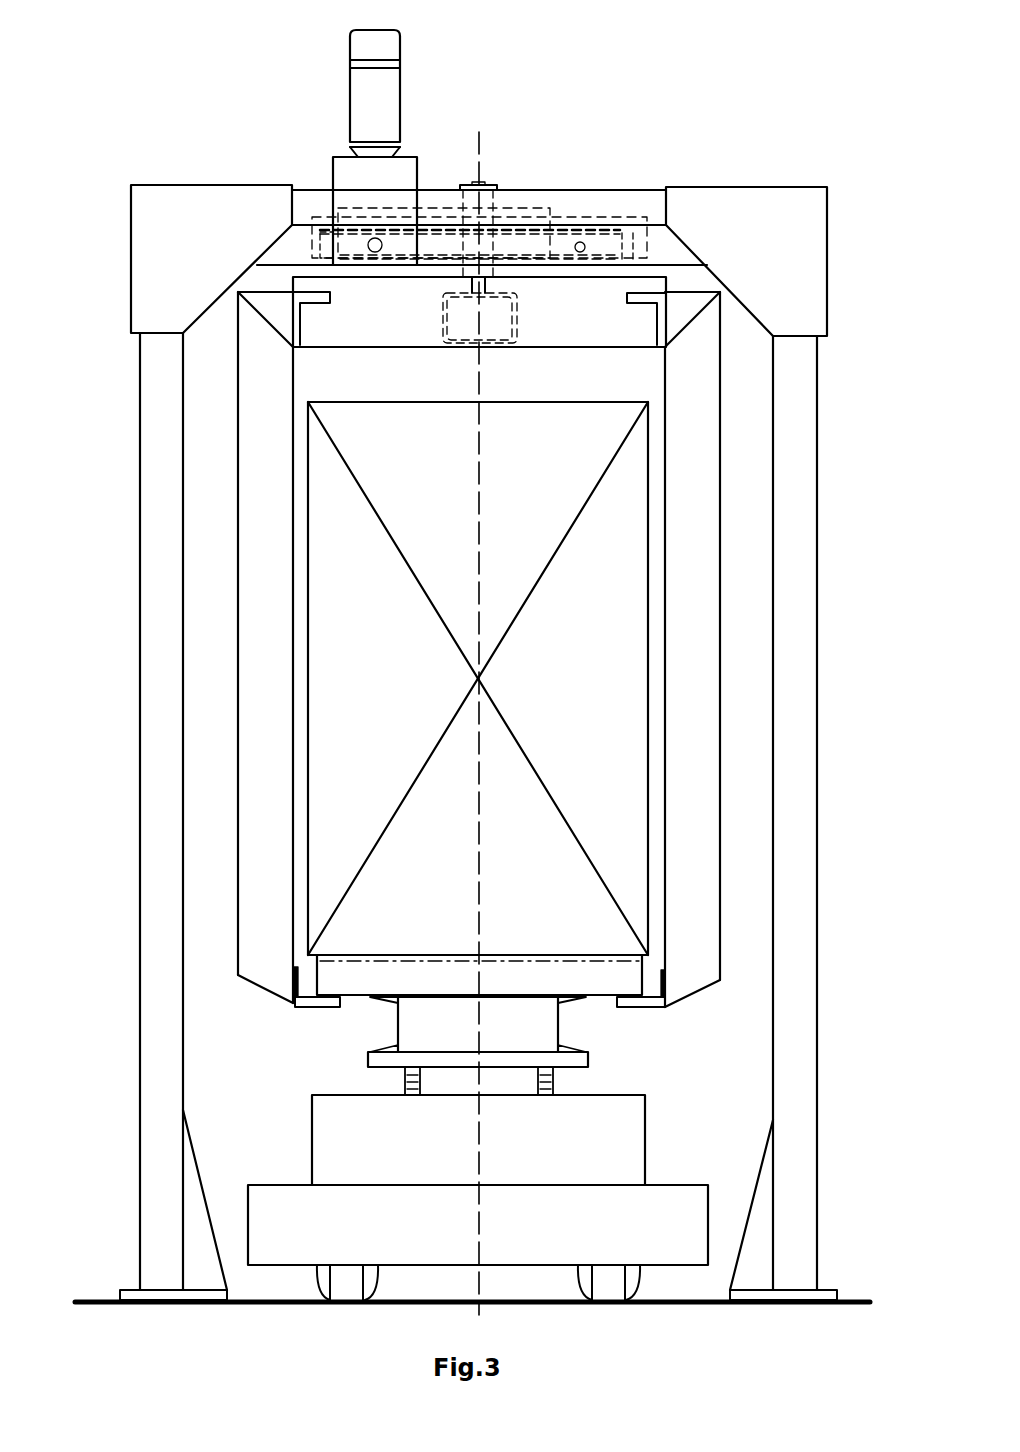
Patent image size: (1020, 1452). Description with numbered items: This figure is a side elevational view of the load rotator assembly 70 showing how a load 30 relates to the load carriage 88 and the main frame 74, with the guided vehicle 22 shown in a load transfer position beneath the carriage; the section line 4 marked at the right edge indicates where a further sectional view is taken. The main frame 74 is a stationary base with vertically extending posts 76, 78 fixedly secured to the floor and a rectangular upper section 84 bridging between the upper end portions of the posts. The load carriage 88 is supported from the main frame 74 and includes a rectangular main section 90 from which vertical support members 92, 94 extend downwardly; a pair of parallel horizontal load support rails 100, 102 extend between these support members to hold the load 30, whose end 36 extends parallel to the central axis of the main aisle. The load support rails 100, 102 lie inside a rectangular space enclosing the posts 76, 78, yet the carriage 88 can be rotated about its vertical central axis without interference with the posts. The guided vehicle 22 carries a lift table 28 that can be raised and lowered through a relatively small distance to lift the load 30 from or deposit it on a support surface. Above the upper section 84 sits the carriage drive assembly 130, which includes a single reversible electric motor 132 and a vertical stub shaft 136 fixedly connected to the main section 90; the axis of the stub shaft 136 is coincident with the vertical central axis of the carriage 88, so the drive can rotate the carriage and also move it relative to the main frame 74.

The section line 4- 4 is at (890, 87).
The first guided vehicle 22 is at (285, 1262).
The lift table 28 is at (510, 1018).
The load 30 is at (390, 444).
The end 36 is at (548, 506).
The load rotator assembly 70 is at (818, 140).
The main frame 74 is at (818, 428).
The vertically extending post 76 is at (167, 1023).
The vertically extending post 78 is at (793, 1017).
The upper section 84 is at (622, 200).
The load carriage 88 is at (237, 862).
The main section 90 is at (553, 318).
The vertical support member 92 is at (258, 580).
The vertical support member 94 is at (695, 873).
The load support rail 100 is at (300, 1007).
The load support rail 102 is at (648, 1007).
The carriage drive assembly 130 is at (273, 150).
The reversible electric motor 132 is at (387, 100).
The vertical stub shaft 136 is at (480, 182).